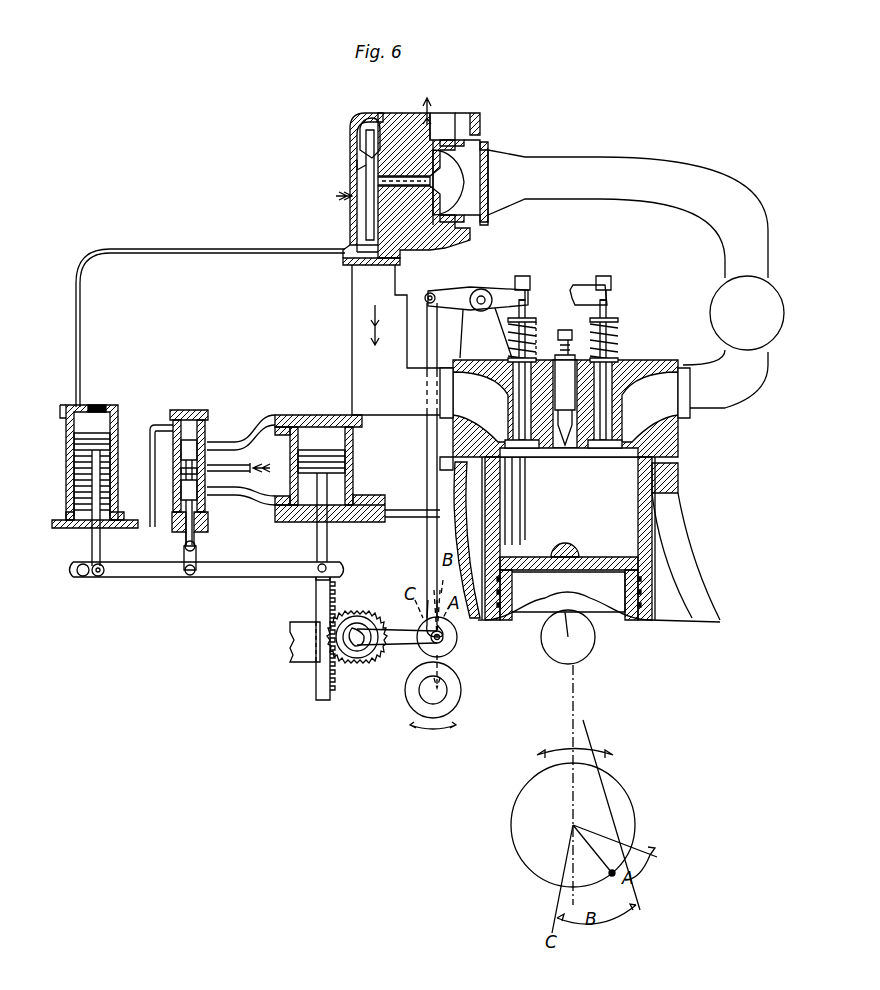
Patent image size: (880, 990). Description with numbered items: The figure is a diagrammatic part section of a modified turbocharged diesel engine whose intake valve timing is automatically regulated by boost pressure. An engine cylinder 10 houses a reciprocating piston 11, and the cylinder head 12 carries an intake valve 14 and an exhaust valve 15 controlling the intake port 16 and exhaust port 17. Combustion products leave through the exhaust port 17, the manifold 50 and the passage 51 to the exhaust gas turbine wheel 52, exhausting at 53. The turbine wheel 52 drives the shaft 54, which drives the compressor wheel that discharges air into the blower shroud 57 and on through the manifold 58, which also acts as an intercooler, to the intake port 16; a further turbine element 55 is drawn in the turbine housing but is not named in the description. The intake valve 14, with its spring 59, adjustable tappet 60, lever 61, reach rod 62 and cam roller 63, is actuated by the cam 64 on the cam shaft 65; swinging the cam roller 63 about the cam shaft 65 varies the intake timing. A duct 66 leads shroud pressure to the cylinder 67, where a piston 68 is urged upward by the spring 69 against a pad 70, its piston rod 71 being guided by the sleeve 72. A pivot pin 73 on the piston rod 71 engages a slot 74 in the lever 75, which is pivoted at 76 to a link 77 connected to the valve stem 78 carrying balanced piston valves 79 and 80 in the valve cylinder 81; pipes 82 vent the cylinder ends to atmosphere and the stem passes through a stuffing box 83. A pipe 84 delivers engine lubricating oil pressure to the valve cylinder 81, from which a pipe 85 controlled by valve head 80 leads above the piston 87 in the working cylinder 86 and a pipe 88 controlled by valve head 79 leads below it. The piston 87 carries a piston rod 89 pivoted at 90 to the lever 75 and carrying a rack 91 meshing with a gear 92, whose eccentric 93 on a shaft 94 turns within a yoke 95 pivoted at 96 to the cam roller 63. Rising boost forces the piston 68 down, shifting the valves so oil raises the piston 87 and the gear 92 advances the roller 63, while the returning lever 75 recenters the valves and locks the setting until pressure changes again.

The engine cylinder 10 is at (638, 521).
The piston 11 is at (590, 560).
The cylinder head 12 is at (625, 365).
The intake valve 14 is at (540, 450).
The exhaust valve 15 is at (605, 450).
The intake port 16 is at (482, 408).
The exhaust port 17 is at (662, 402).
The manifold 50 is at (755, 322).
The passage 51 is at (600, 157).
The exhaust gas turbine wheel 52 is at (470, 150).
The exhaust 53 is at (440, 128).
The shaft 54 is at (378, 181).
The turbine nozzle 55 is at (366, 166).
The blower shroud 57 is at (362, 128).
The manifold 58 is at (352, 348).
The spring 59 is at (528, 345).
The adjustable tappet 60 is at (528, 290).
The lever 61 is at (450, 291).
The reach rod 62 is at (437, 352).
The cam roller 63 is at (458, 650).
The cam 64 is at (461, 692).
The cam shaft 65 is at (420, 698).
The duct 66 is at (216, 249).
The cylinder 67 is at (74, 445).
The piston 68 is at (82, 432).
The spring 69 is at (74, 468).
The pad 70 is at (96, 406).
The piston rod 71 is at (92, 540).
The sleeve 72 is at (70, 512).
The pivot pin 73 is at (96, 577).
The slot 74 is at (80, 575).
The lever 75 is at (226, 578).
The pivot 76 is at (186, 578).
The link 77 is at (197, 560).
The valve stem 78 is at (208, 520).
The piston valve 79 is at (198, 490).
The piston valve 80 is at (195, 440).
The valve cylinder 81 is at (189, 410).
The pipes 82 is at (150, 527).
The stuffing box 83 is at (186, 538).
The pipe 84 is at (238, 455).
The pipe 85 is at (255, 420).
The working cylinder 86 is at (353, 448).
The piston 87 is at (345, 468).
The pipe 88 is at (262, 505).
The piston rod 89 is at (327, 543).
The pivot 90 is at (316, 575).
The rack 91 is at (318, 685).
The gear 92 is at (358, 658).
The eccentric 93 is at (354, 623).
The shaft 94 is at (360, 640).
The yoke 95 is at (392, 630).
The pivot 96 is at (445, 638).